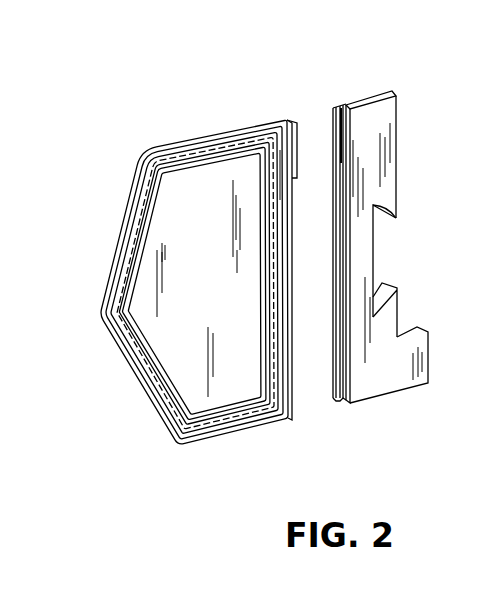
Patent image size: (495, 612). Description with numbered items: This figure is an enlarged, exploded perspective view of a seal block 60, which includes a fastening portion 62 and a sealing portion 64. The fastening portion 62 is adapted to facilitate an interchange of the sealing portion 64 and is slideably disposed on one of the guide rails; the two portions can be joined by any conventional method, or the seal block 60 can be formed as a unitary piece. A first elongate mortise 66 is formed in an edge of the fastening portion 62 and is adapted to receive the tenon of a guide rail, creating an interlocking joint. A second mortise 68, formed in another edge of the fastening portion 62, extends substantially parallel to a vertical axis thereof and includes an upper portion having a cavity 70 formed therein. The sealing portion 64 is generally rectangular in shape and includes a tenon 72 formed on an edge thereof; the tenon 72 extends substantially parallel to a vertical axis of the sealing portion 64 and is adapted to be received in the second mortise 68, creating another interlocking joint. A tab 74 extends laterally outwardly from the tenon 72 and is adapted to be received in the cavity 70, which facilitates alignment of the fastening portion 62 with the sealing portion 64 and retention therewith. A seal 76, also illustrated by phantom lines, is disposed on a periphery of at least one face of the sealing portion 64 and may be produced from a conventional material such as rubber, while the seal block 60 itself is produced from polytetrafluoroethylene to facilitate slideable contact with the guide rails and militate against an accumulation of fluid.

The seal block 60 is at (106, 133).
The fastening portion 62 is at (380, 118).
The sealing portion 64 is at (143, 186).
The first elongate mortise 66 is at (375, 260).
The second mortise 68 is at (338, 400).
The cavity 70 is at (343, 120).
The tenon 72 is at (290, 407).
The tab 74 is at (284, 121).
The seal 76 is at (142, 357).